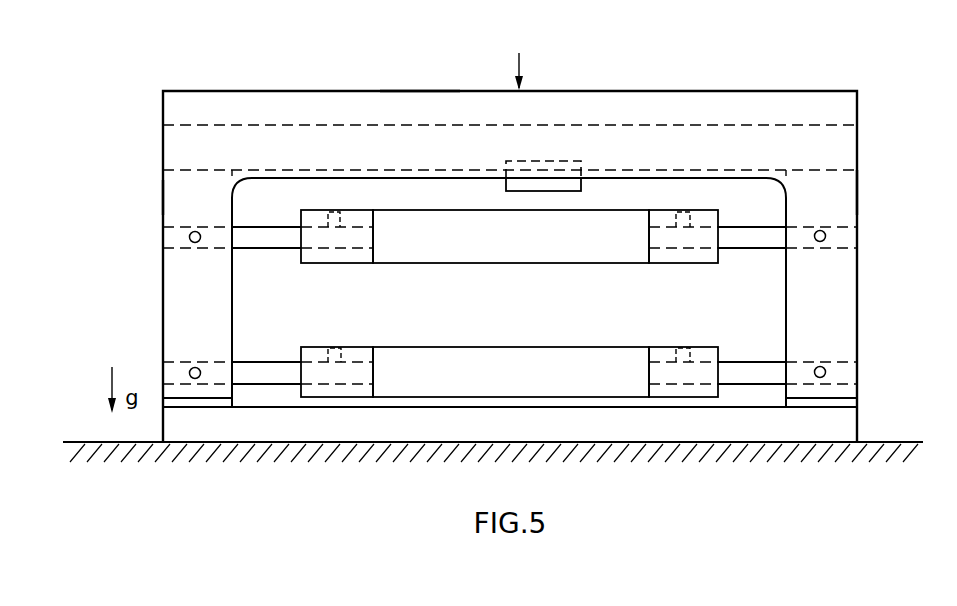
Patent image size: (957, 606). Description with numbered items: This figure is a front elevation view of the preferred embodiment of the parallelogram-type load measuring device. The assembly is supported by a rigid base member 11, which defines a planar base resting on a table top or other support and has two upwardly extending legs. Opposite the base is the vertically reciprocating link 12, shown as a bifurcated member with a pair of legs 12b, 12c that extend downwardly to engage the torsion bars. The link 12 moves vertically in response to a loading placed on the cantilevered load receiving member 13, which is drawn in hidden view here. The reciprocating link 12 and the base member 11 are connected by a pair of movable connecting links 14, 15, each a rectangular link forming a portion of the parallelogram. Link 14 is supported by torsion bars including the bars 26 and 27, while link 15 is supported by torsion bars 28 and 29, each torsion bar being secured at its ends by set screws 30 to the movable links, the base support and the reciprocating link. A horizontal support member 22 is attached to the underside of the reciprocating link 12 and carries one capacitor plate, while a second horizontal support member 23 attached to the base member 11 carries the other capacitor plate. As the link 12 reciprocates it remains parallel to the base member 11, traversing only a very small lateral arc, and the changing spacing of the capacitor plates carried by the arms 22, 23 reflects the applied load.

The base member 11 is at (564, 431).
The reciprocating link 12 is at (444, 157).
The leg of reciprocating link 12b is at (175, 197).
The leg of reciprocating link 12c is at (845, 184).
The load receiving member 13 is at (413, 102).
The movable connecting link 14 is at (486, 264).
The movable connecting link 15 is at (563, 347).
The horizontal support member 22 is at (506, 190).
The second horizontal support member 23 is at (566, 165).
The torsion bar 26 is at (270, 250).
The torsion bar 27 is at (753, 250).
The torsion bar 28 is at (260, 362).
The torsion bar 29 is at (750, 361).
The set screws 30 is at (332, 211).